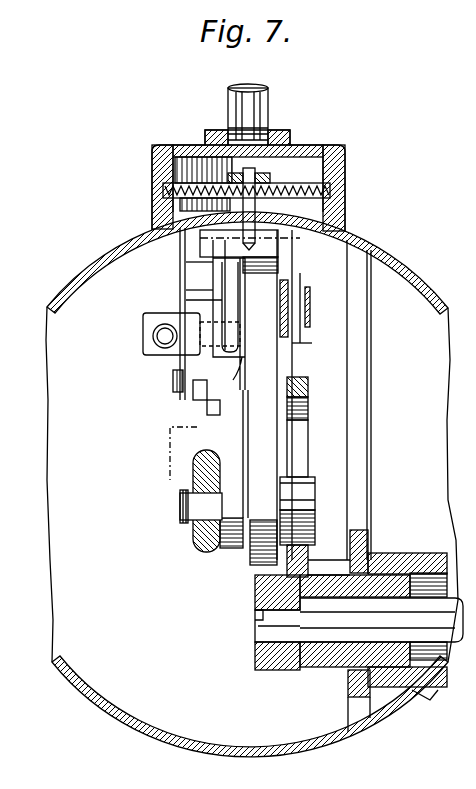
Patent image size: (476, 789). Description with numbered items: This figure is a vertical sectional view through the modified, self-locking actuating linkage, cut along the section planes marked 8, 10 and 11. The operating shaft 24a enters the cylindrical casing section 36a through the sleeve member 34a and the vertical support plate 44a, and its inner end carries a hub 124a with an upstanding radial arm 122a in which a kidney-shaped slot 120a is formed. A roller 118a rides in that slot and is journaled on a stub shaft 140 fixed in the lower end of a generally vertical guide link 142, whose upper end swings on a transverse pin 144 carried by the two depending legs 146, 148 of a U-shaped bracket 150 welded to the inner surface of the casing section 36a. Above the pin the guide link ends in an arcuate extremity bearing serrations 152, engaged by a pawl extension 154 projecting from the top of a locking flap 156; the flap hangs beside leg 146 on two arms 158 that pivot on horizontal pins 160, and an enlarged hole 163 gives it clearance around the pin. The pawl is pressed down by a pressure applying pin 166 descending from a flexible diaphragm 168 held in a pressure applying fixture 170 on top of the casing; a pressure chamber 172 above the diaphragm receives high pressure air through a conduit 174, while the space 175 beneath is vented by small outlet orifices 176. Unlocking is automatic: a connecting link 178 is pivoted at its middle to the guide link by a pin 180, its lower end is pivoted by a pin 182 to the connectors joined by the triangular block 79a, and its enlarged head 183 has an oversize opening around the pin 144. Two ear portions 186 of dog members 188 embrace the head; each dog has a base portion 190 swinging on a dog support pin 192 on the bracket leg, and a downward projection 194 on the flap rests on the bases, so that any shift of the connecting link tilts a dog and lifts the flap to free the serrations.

The section line 8 is at (145, 230).
The section line 10 is at (135, 267).
The section line 11 is at (374, 240).
The operating shaft 24a is at (405, 622).
The sleeve member 34a is at (412, 702).
The casing section 36a is at (410, 268).
The support plate 44a is at (360, 456).
The triangular block 79a is at (206, 555).
The roller 118a is at (305, 502).
The kidney-shaped slot 120a is at (302, 452).
The radial arm 122a is at (305, 392).
The hub 124a is at (270, 672).
The stub shaft 140 is at (290, 512).
The guide link 142 is at (270, 425).
The transverse pin 144 is at (318, 339).
The bracket leg 146 is at (186, 264).
The bracket leg 148 is at (310, 292).
The U-shaped bracket 150 is at (383, 349).
The serrations 152 is at (300, 282).
The pawl extension 154 is at (278, 248).
The locking flap 156 is at (205, 302).
The arms 158 is at (142, 320).
The horizontal pins 160 is at (165, 336).
The enlarged hole 163 is at (212, 270).
The pressure applying pin 166 is at (244, 240).
The flexible diaphragm 168 is at (278, 176).
The pressure applying fixture 170 is at (362, 151).
The pressure chamber 172 is at (290, 158).
The conduit 174 is at (266, 110).
The space 175 is at (348, 184).
The outlet orifices 176 is at (162, 216).
The connecting link 178 is at (228, 444).
The pin 180 is at (170, 432).
The pin 182 is at (180, 506).
The enlarged head 183 is at (210, 290).
The ear portions 186 is at (230, 312).
The dog members 188 is at (236, 383).
The base portion 190 is at (195, 398).
The dog support pin 192 is at (173, 382).
The projection 194 is at (215, 410).